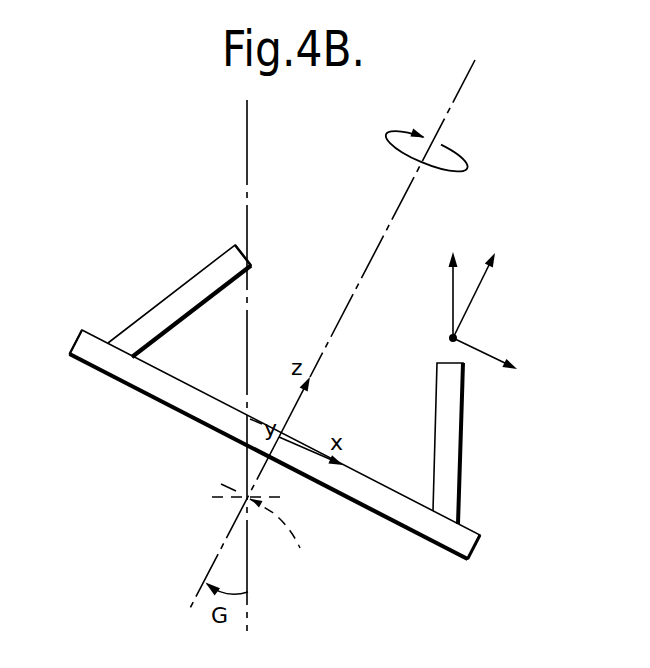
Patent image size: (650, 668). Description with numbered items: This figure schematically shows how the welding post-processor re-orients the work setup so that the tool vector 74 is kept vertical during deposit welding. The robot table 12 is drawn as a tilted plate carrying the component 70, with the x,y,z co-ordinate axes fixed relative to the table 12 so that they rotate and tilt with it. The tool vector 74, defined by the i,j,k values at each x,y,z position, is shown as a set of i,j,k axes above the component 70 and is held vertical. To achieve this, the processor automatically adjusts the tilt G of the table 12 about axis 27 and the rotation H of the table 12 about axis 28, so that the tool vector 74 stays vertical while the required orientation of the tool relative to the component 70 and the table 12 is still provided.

The robot table 12 is at (447, 542).
The tilt axis 27 is at (298, 544).
The rotation axis 28 is at (453, 100).
The component 70 is at (452, 456).
The tool vector 74 is at (453, 305).